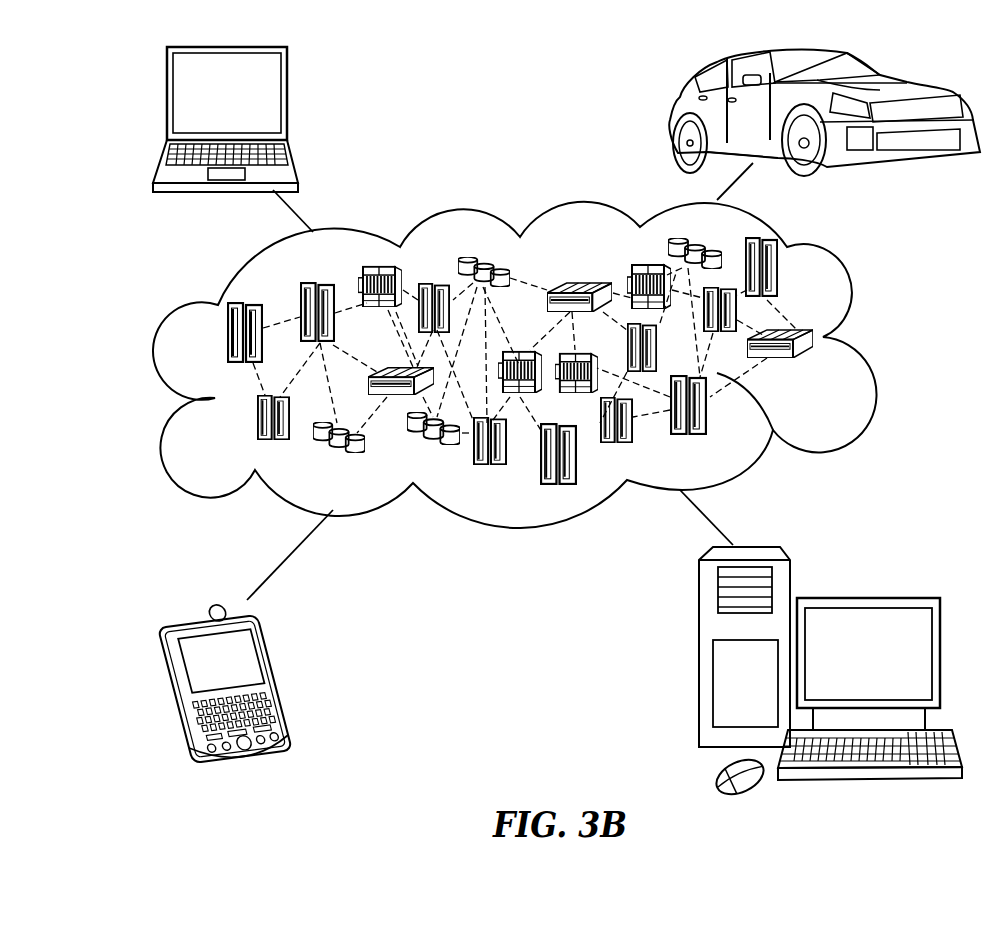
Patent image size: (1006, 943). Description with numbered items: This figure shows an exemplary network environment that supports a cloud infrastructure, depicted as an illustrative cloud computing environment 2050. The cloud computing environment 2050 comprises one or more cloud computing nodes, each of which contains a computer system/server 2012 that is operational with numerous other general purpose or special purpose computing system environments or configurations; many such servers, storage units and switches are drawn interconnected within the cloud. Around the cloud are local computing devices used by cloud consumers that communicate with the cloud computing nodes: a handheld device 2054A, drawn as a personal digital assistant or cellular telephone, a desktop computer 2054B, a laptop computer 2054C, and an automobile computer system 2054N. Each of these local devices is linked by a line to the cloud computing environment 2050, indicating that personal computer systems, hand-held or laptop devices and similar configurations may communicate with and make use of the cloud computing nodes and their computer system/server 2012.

The handheld computing device (PDA) 2054A is at (277, 678).
The desktop computer 2054B is at (865, 597).
The laptop computer 2054C is at (287, 100).
The automobile computer system 2054N is at (672, 115).
The cloud computing environment 2050 is at (553, 381).
The computer system/server 2012 is at (820, 369).